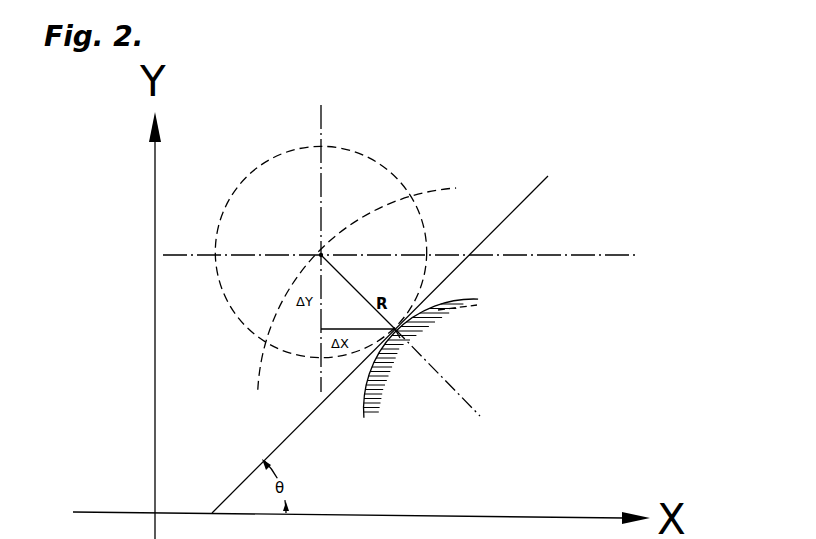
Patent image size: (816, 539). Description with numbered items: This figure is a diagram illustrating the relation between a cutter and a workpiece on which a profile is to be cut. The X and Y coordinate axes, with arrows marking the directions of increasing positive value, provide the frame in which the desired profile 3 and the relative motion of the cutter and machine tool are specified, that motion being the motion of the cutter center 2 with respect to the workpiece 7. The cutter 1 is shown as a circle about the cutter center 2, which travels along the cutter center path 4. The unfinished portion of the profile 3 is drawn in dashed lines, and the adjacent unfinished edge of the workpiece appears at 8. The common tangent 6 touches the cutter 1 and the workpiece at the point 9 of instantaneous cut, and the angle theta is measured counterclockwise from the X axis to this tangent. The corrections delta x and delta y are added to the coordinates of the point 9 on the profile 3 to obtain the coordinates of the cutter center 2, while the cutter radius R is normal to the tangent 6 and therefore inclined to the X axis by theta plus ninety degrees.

The cutter 1 is at (396, 178).
The cutter center 2 is at (320, 254).
The profile 3 is at (456, 309).
The cutter center path 4 is at (262, 380).
The common tangent 6 is at (509, 216).
The workpiece 7 is at (427, 345).
The unfinished edge of the workpiece 8 is at (462, 301).
The point of instantaneous cut 9 is at (400, 338).